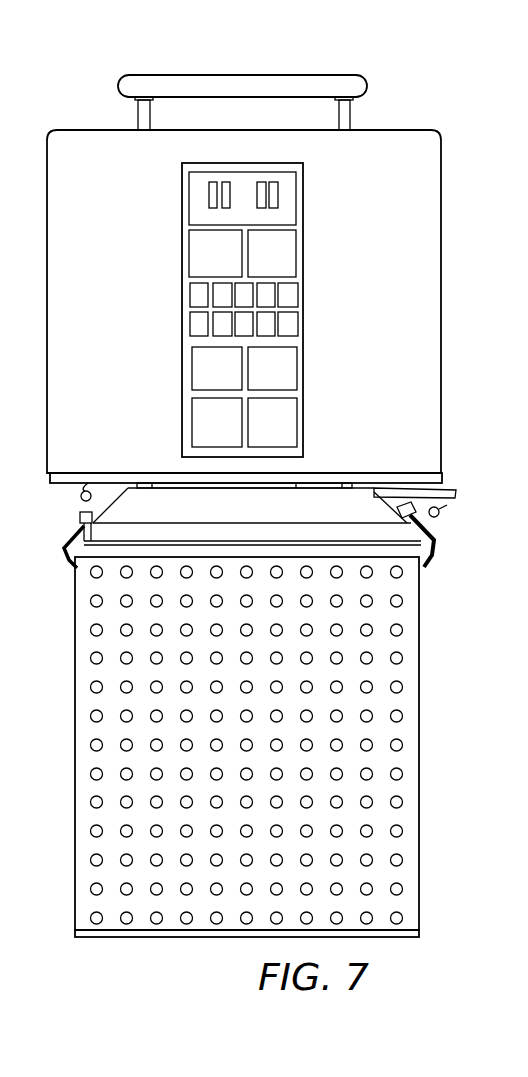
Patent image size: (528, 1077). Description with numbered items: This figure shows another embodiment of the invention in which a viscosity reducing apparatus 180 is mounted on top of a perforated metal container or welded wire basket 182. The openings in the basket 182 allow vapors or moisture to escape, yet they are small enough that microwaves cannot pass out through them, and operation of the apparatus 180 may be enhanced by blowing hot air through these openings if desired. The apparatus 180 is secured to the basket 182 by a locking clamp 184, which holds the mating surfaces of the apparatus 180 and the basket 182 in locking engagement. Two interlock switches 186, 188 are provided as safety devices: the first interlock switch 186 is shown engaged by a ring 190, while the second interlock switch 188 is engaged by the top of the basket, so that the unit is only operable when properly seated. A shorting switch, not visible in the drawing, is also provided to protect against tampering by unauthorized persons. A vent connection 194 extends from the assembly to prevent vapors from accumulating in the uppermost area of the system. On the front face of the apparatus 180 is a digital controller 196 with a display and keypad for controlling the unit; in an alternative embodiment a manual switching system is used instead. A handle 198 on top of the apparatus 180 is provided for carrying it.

The viscosity reducing apparatus 180 is at (32, 177).
The perforated metal container or welded wire basket 182 is at (418, 748).
The locking clamp 184 is at (436, 553).
The interlock switch 186 is at (444, 510).
The interlock switch 188 is at (80, 517).
The ring 190 is at (91, 537).
The vent connection 194 is at (454, 488).
The digital controller 196 is at (304, 208).
The handle 198 is at (118, 88).